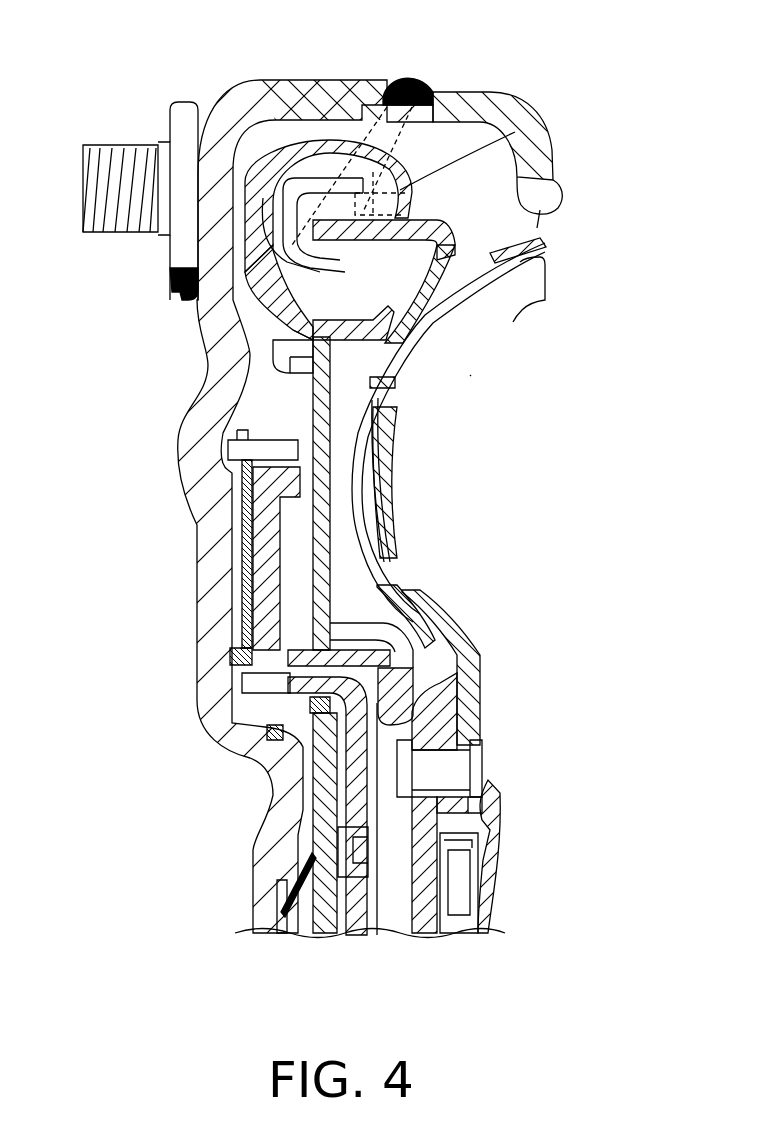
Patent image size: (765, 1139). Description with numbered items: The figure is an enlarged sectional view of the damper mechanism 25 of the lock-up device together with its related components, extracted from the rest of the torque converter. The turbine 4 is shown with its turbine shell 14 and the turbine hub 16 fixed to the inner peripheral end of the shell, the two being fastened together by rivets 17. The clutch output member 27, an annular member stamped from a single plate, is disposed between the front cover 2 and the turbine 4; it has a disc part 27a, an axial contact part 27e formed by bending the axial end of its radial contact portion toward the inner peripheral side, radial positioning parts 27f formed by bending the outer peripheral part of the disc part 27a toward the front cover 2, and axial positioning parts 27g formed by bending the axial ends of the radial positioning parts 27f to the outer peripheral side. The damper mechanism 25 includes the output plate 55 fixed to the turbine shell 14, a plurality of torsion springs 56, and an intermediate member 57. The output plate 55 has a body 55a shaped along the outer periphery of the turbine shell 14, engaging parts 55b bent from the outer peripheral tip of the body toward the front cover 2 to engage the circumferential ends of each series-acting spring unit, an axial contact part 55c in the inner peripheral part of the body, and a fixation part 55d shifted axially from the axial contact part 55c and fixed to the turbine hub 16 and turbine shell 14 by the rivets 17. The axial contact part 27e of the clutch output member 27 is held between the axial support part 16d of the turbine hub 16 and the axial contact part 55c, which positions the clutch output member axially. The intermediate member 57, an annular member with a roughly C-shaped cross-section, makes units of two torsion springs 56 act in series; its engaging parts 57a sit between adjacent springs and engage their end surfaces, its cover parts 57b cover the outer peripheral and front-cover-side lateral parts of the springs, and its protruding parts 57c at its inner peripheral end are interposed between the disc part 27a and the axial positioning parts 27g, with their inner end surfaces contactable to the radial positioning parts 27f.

The front cover 2 is at (176, 440).
The turbine 4 is at (472, 375).
The turbine shell 14 is at (520, 262).
The turbine hub 16 is at (440, 840).
The axial support part 16d is at (262, 725).
The rivets 17 is at (440, 773).
The damper mechanism 25 is at (412, 148).
The clutch output member 27 is at (310, 518).
The disc part 27a is at (373, 460).
The axial contact part 27e is at (405, 660).
The radial positioning parts 27f is at (300, 368).
The axial positioning parts 27g is at (268, 348).
The output plate 55 is at (462, 228).
The body 55a is at (382, 373).
The engaging parts 55b is at (543, 126).
The axial contact part 55c is at (417, 667).
The fixation part 55d is at (443, 730).
The torsion springs 56 is at (312, 178).
The intermediate member 57 is at (275, 146).
The engaging parts 57a is at (400, 70).
The cover parts 57b is at (267, 175).
The protruding parts 57c is at (273, 340).